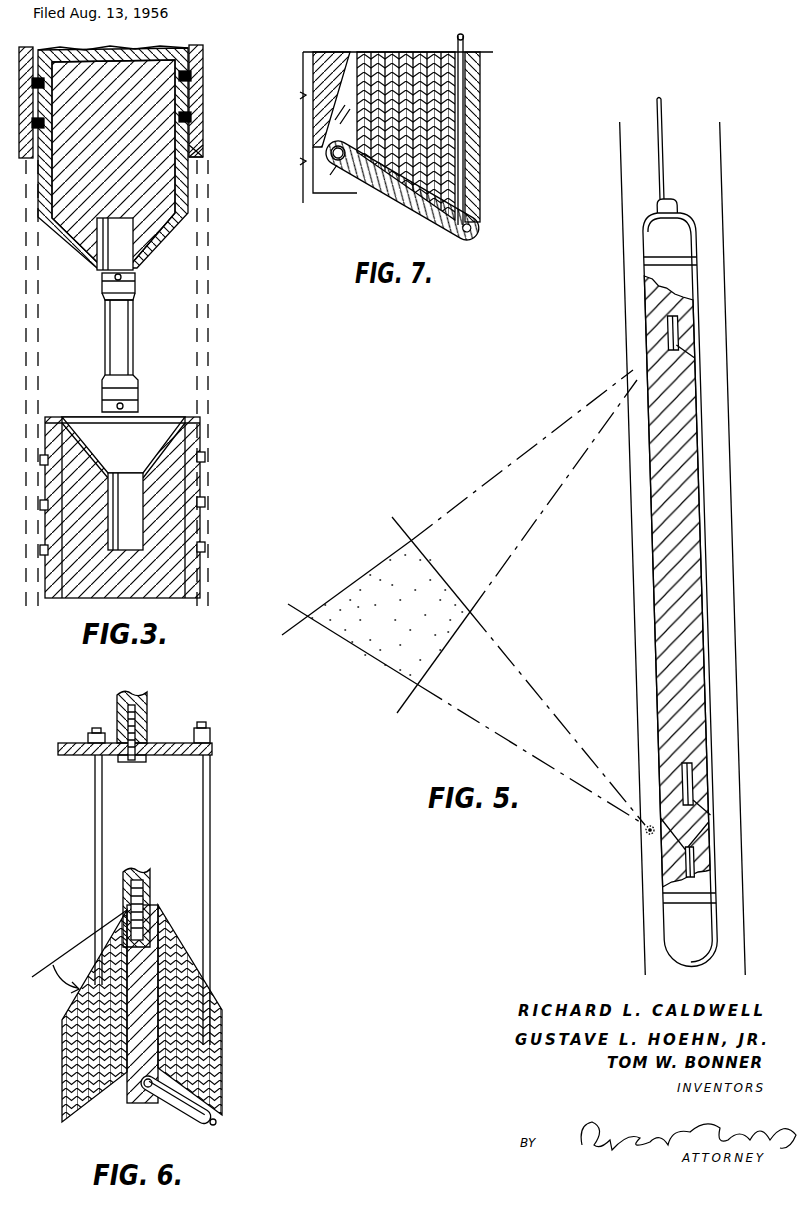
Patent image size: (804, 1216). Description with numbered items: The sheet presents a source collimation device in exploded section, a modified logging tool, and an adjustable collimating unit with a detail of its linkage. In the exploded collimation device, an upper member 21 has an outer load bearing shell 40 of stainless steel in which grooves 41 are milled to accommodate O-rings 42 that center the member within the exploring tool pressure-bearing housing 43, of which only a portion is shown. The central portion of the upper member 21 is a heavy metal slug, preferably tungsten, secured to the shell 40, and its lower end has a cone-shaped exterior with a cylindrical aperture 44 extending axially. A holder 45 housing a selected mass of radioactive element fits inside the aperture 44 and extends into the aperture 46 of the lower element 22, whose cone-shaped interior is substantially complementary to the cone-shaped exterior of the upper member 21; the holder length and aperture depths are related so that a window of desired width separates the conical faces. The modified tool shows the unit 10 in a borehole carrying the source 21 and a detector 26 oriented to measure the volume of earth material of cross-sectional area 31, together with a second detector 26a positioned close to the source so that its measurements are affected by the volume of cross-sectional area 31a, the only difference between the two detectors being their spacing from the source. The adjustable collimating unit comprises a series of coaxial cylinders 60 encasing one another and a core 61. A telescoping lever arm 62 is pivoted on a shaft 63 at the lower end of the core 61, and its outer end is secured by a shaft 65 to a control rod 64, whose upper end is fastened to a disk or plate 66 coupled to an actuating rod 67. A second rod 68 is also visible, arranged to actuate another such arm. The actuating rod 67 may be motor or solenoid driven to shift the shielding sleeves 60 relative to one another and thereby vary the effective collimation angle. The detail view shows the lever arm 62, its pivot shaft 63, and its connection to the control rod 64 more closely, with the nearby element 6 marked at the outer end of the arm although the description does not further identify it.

In FIG. 7, the fin stack 6 is at (474, 229).
In FIG. 5, the unit 10 is at (685, 245).
In FIG. 3, the upper member 21 is at (118, 137).
In FIG. 5, the upper member 21 is at (700, 862).
In FIG. 3, the lower element 22 is at (133, 581).
In FIG. 5, the detector 26 is at (680, 332).
In FIG. 5, the second detector 26a is at (696, 782).
In FIG. 5, the cross-sectional area 31 is at (390, 627).
In FIG. 5, the cross-sectional area 31a is at (643, 846).
In FIG. 3, the outer load bearing shell 40 is at (181, 104).
In FIG. 3, the grooves 41 is at (200, 52).
In FIG. 3, the O-rings 42 is at (191, 79).
In FIG. 3, the pressure-bearing housing 43 is at (203, 156).
In FIG. 3, the cylindrical aperture 44 is at (123, 248).
In FIG. 3, the holder 45 is at (122, 286).
In FIG. 3, the aperture 46 is at (126, 479).
In FIG. 6, the coaxial cylinders 60 is at (72, 1118).
In FIG. 7, the core 61 is at (322, 73).
In FIG. 6, the core 61 is at (127, 1102).
In FIG. 7, the telescoping lever arm 62 is at (415, 205).
In FIG. 6, the telescoping lever arm 62 is at (185, 1103).
In FIG. 7, the shaft 63 is at (329, 160).
In FIG. 6, the shaft 63 is at (148, 1090).
In FIG. 7, the control rod 64 is at (466, 40).
In FIG. 6, the control rod 64 is at (210, 788).
In FIG. 6, the shaft 65 is at (217, 1122).
In FIG. 6, the plate 66 is at (212, 748).
In FIG. 6, the actuating rod 67 is at (150, 698).
In FIG. 6, the second rod 68 is at (100, 822).